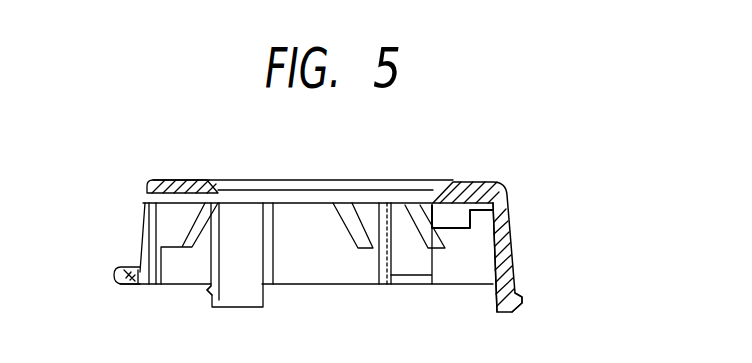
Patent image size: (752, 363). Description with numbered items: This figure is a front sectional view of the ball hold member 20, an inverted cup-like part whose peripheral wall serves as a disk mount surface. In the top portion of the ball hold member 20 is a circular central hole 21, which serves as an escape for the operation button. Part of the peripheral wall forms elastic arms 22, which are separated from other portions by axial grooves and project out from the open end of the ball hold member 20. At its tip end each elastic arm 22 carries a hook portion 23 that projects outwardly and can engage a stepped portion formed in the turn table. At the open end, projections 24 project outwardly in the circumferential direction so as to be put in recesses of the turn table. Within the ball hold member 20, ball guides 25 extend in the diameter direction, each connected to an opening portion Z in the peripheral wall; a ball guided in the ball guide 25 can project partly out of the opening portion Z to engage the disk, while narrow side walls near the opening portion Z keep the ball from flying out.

The ball hold member 20 is at (505, 196).
The circular central hole 21 is at (431, 201).
The elastic arm 22 is at (256, 293).
The hook portion 23 is at (210, 298).
The projection 24 is at (122, 268).
The ball guide 25 is at (163, 218).
The opening portion Z is at (130, 237).